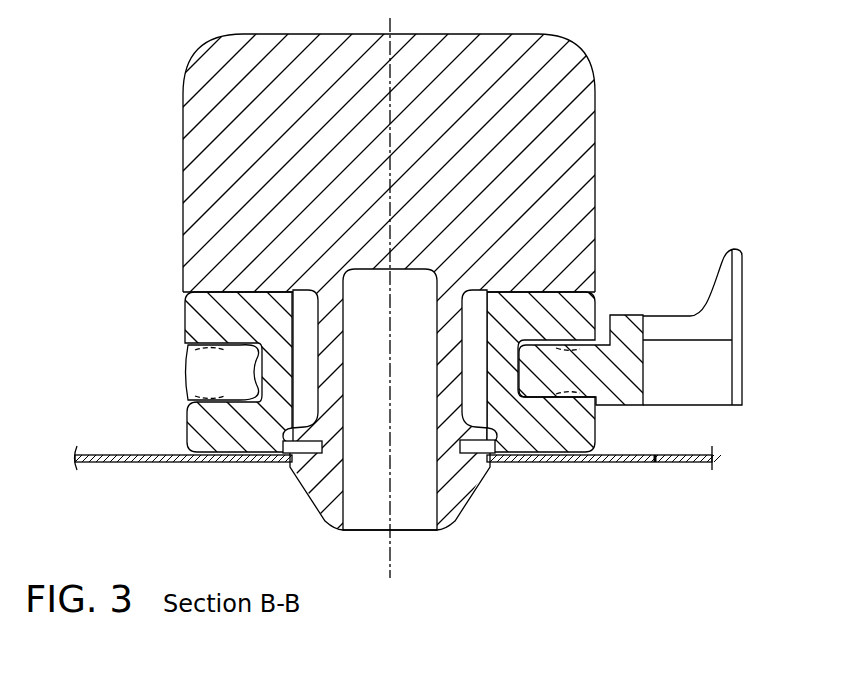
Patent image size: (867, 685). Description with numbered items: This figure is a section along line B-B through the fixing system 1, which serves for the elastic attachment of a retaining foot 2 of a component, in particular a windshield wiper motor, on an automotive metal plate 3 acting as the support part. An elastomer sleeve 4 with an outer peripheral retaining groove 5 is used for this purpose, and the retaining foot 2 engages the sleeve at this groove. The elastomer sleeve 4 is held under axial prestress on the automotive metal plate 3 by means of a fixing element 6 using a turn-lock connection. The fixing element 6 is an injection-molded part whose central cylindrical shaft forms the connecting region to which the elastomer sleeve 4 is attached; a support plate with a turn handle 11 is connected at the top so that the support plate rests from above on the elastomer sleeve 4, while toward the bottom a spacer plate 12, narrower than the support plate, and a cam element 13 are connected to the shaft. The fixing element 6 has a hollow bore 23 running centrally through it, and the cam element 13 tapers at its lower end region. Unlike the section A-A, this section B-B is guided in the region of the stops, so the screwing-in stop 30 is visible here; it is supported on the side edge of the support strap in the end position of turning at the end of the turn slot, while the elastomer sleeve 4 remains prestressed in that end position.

The fixing system 1 is at (433, 342).
The retaining foot 2 is at (727, 302).
The automotive metal plate 3 is at (656, 462).
The elastomer sleeve 4 is at (433, 342).
The outer peripheral retaining groove 5 is at (232, 403).
The fixing element 6 is at (433, 342).
The turn handle 11 is at (582, 181).
The spacer plate 12 is at (489, 455).
The cam element 13 is at (433, 342).
The hollow bore 23 is at (362, 508).
The screwing-in stop 30 is at (293, 467).